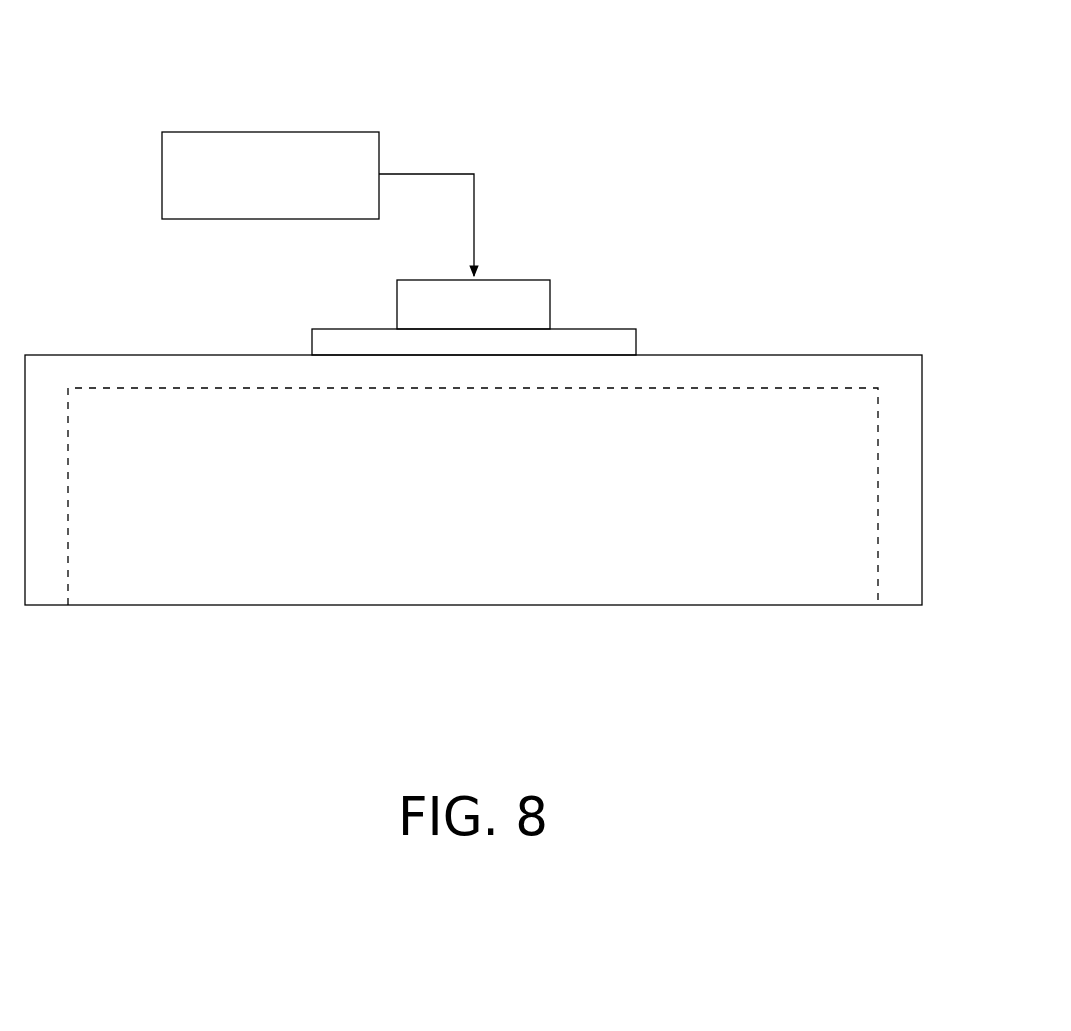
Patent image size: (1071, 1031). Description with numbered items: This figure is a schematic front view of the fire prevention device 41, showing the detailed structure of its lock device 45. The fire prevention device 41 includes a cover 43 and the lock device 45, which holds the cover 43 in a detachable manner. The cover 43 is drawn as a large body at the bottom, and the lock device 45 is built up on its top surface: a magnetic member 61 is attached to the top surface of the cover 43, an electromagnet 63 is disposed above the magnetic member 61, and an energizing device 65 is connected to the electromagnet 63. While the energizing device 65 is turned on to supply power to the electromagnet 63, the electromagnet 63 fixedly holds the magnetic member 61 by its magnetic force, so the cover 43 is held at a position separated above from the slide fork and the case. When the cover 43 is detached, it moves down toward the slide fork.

The fire prevention device 41 is at (732, 160).
The cover 43 is at (774, 334).
The lock device 45 is at (549, 185).
The magnetic member 61 is at (608, 335).
The electromagnet 63 is at (522, 290).
The energizing device 65 is at (290, 132).